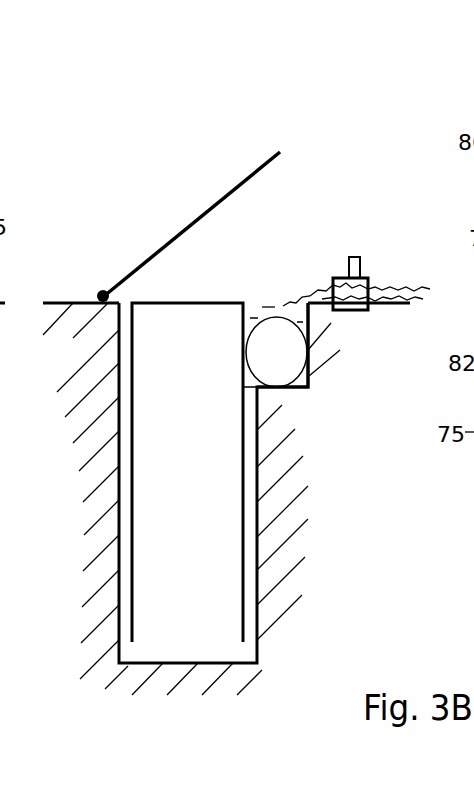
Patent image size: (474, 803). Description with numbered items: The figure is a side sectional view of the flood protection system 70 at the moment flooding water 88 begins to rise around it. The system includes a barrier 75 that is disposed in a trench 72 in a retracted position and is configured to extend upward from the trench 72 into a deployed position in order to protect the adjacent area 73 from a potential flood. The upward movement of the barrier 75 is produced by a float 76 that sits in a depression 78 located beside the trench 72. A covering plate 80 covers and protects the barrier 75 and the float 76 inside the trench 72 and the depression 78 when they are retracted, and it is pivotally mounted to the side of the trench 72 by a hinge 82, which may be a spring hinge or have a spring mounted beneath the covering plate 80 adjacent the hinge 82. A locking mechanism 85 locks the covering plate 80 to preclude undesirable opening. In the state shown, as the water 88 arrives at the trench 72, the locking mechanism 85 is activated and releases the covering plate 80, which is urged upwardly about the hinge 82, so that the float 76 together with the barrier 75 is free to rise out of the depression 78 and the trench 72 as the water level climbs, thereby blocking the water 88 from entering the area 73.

The flood protection system 70 is at (207, 157).
The trench 72 is at (258, 533).
The area 73 is at (70, 302).
The barrier 75 is at (152, 528).
The float 76 is at (277, 333).
The depression 78 is at (308, 374).
The covering plate 80 is at (143, 253).
The hinge 82 is at (100, 292).
The locking mechanism 85 is at (337, 278).
The water 88 is at (388, 296).